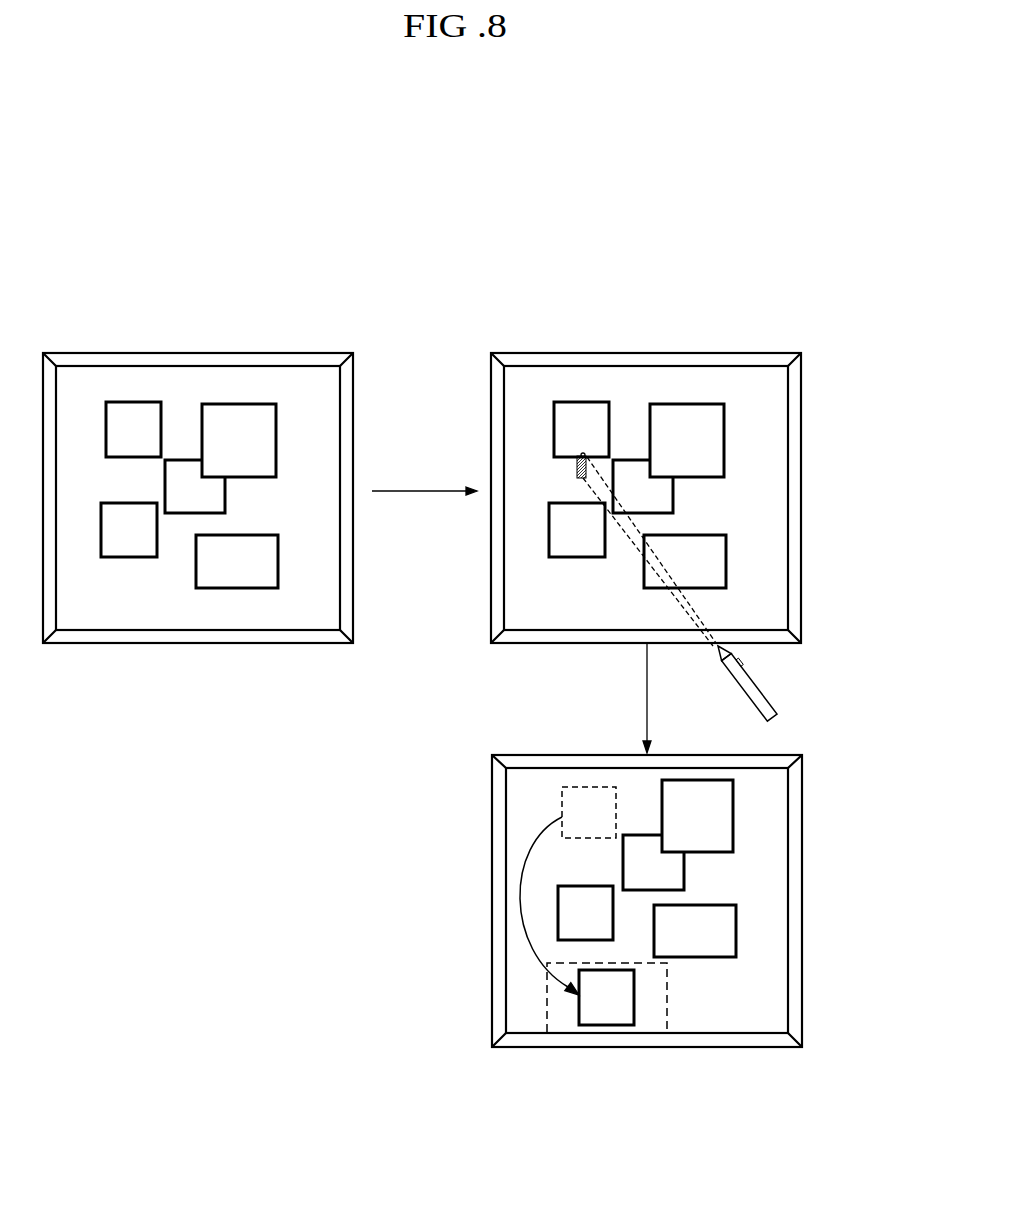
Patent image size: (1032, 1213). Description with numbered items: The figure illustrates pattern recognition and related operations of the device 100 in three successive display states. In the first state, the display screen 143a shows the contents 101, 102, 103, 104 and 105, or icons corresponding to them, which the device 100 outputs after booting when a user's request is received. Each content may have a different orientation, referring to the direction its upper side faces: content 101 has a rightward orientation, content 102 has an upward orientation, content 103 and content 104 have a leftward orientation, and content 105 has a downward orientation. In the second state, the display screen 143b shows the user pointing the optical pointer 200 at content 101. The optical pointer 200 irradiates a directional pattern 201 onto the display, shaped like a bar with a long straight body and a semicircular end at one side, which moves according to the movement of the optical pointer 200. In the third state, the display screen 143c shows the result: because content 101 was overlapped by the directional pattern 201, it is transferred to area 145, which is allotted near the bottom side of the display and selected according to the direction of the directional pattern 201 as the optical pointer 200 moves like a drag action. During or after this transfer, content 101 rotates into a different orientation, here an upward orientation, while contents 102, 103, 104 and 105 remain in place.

The device 100 is at (266, 353).
The content 101 is at (106, 427).
The content 102 is at (276, 437).
The content 103 is at (225, 496).
The content 104 is at (130, 557).
The content 105 is at (257, 588).
The display screen 143a is at (320, 576).
The display screen 143b is at (767, 576).
The display screen 143c is at (777, 990).
The area 145 is at (667, 1010).
The optical pointer 200 is at (758, 683).
The directional pattern 201 is at (573, 467).